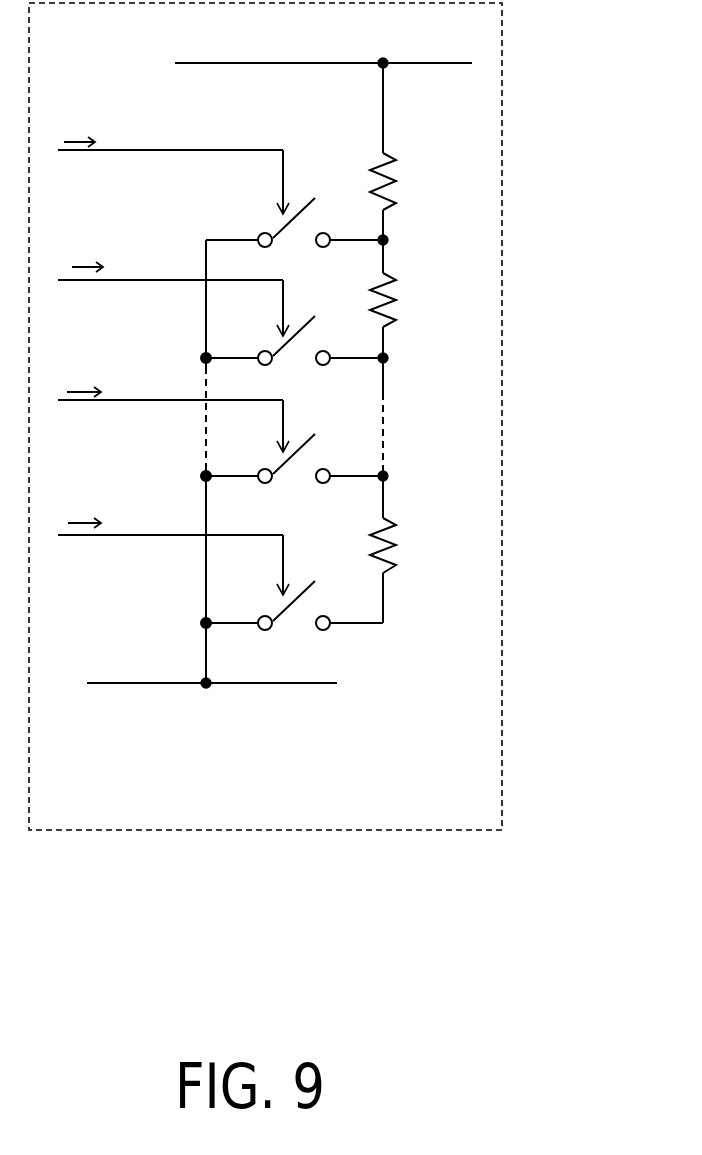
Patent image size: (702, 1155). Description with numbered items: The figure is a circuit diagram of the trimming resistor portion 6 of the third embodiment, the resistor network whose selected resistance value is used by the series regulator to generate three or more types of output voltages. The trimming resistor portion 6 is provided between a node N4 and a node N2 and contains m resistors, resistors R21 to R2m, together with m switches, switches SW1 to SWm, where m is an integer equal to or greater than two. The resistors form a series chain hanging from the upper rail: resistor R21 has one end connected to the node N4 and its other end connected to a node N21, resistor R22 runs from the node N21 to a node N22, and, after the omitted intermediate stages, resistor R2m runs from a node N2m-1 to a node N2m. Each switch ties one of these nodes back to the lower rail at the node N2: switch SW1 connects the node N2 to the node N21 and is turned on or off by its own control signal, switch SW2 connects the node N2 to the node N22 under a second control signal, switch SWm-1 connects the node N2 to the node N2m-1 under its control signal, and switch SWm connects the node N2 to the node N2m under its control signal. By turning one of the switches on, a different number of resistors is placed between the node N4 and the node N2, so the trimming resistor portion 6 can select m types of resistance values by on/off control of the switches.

The trimming resistor portion 6 is at (502, 170).
The resistor R21 is at (403, 170).
The resistor R22 is at (403, 290).
The resistor R2m is at (402, 537).
The switch SW1 is at (298, 255).
The switch SW2 is at (298, 365).
The switch SWm-1 is at (298, 487).
The switch SWm is at (295, 633).
The node N4 is at (323, 49).
The node N2 is at (212, 701).
The node N21 is at (367, 231).
The node N22 is at (367, 350).
The node N2m-1 is at (415, 467).
The node N2m is at (382, 622).